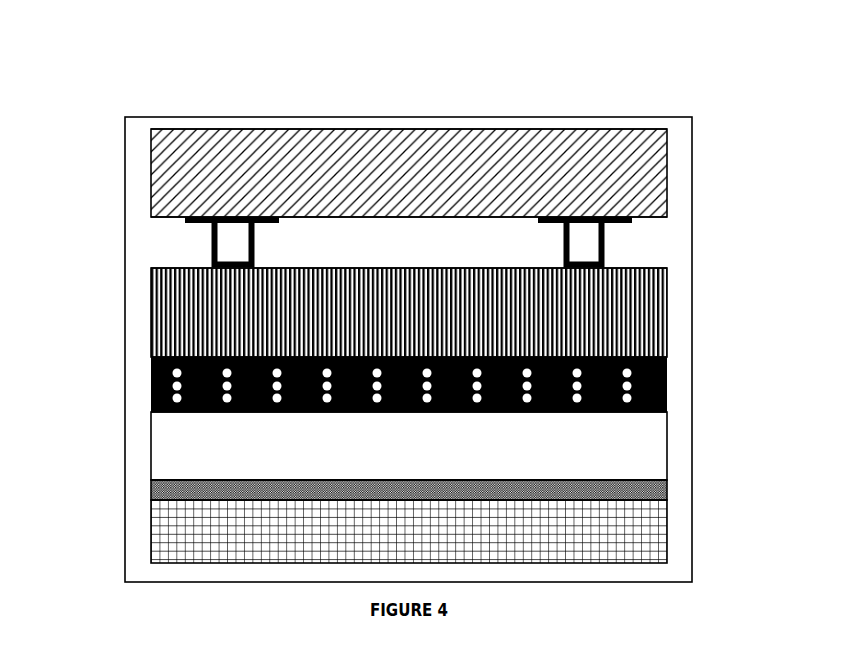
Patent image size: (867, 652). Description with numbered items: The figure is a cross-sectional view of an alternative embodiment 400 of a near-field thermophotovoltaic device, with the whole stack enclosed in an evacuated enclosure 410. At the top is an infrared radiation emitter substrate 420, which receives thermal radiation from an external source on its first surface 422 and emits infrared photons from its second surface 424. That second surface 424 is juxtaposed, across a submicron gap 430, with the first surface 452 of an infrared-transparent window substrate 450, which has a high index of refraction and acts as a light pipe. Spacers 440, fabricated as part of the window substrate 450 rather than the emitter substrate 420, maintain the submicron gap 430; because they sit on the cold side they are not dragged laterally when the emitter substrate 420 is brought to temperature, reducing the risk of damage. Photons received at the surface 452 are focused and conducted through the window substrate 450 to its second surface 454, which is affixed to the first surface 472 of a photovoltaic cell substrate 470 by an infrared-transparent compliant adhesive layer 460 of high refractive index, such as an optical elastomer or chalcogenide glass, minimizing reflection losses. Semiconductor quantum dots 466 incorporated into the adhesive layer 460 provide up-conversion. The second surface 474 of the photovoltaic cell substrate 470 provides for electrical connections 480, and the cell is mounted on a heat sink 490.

The alternative embodiment of a device 400 is at (179, 30).
The evacuated enclosure 410 is at (252, 107).
The infrared radiation emitter substrate 420 is at (392, 162).
The first surface 422 is at (641, 128).
The second surface 424 is at (637, 219).
The submicron gap 430 is at (163, 230).
The spacers 440 is at (202, 255).
The infrared-transparent window substrate 450 is at (392, 312).
The first surface 452 is at (647, 276).
The second surface 454 is at (647, 350).
The infrared-transparent compliant adhesive layer 460 is at (352, 373).
The semiconductor quantum dots 466 is at (172, 398).
The photovoltaic cell substrate 470 is at (397, 440).
The first surface 472 is at (647, 413).
The second surface 474 is at (647, 481).
The electrical connections 480 is at (138, 494).
The heat sink 490 is at (138, 538).